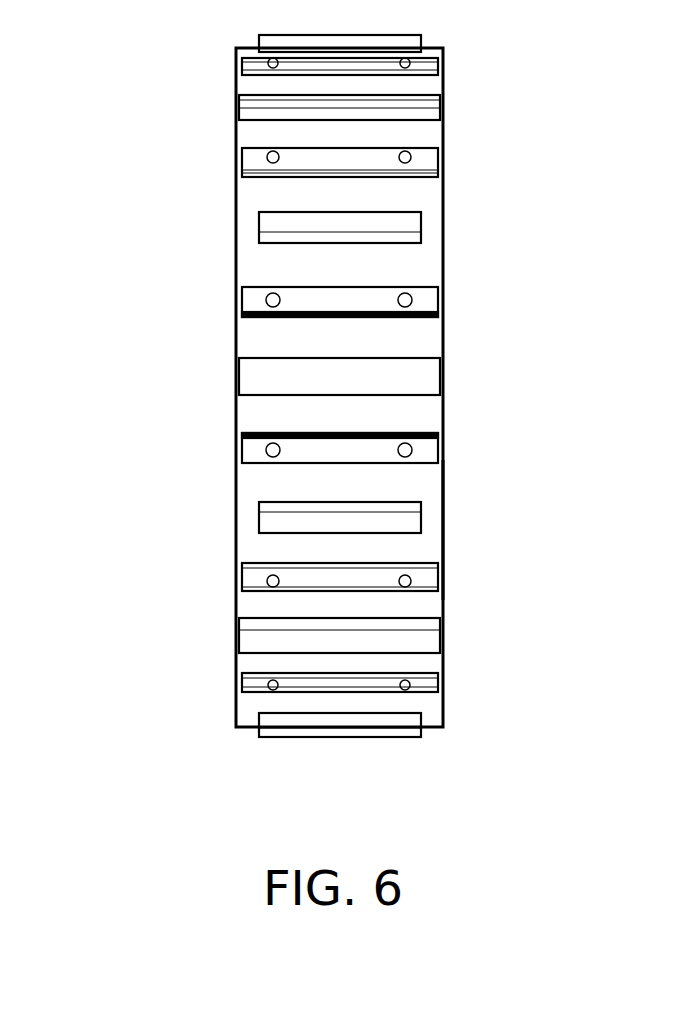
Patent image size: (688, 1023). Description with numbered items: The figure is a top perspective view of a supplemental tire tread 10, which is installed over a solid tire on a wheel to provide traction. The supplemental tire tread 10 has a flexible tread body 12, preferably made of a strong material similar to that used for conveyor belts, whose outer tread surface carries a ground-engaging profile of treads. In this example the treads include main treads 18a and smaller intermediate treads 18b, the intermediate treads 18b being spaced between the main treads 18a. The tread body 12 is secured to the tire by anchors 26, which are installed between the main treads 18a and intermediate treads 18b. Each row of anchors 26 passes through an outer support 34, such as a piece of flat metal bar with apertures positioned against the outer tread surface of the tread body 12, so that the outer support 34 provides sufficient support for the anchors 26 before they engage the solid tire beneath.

The supplemental tire tread 10 is at (430, 205).
The tread body 12 is at (430, 524).
The main treads 18a is at (262, 107).
The intermediate treads 18b is at (259, 45).
The anchors 26 is at (444, 58).
The outer support 34 is at (247, 63).